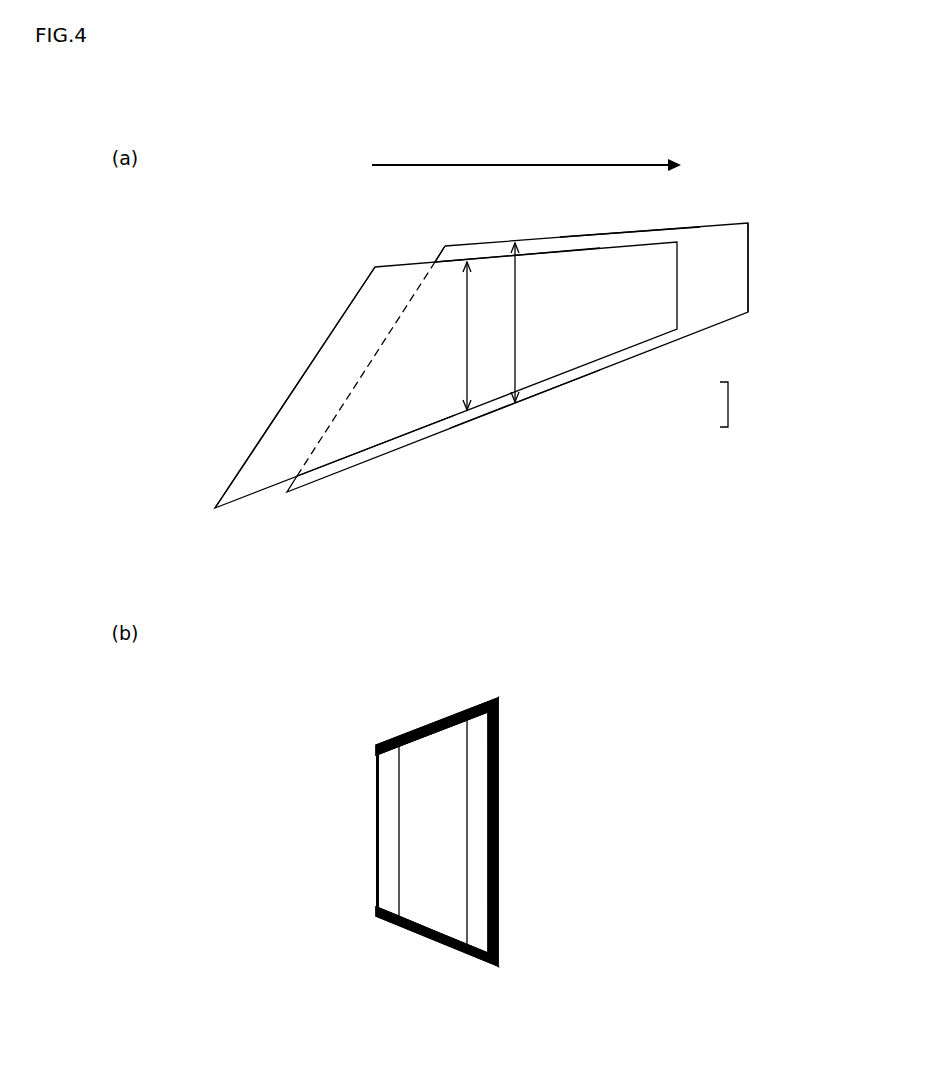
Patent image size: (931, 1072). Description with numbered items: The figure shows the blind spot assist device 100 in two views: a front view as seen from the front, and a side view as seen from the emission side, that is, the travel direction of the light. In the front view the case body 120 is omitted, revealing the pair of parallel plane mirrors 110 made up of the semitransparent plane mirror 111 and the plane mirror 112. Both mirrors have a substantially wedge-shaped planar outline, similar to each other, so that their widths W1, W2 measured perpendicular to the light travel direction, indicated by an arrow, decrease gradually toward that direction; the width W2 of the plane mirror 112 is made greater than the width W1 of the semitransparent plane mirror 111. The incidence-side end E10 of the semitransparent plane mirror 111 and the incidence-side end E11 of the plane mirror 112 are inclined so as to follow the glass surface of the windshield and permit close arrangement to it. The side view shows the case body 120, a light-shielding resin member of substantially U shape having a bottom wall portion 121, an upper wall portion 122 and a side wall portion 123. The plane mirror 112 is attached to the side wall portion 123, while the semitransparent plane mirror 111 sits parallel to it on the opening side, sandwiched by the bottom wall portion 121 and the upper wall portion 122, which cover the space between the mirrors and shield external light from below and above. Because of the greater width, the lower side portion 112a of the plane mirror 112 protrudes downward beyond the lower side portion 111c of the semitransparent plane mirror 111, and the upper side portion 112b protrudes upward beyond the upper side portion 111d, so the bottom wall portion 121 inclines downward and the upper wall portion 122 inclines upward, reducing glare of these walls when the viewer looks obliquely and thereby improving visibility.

The blind spot assist device 100 is at (762, 206).
The pair of parallel plane mirrors 110 is at (728, 404).
The semitransparent plane mirror 111 is at (542, 370).
The lower side portion of the semitransparent plane mirror 111c is at (456, 426).
The upper side portion of the semitransparent plane mirror 111d is at (553, 250).
The plane mirror 112 is at (688, 332).
The lower side portion of the plane mirror 112a is at (540, 393).
The upper side portion of the plane mirror 112b is at (612, 235).
The case body 120 is at (505, 777).
The bottom wall portion 121 is at (443, 943).
The upper wall portion 122 is at (436, 723).
The side wall portion 123 is at (501, 827).
The incidence-side end of the semitransparent plane mirror E10 is at (358, 290).
The incidence-side end of the plane mirror E11 is at (430, 273).
The width of the semitransparent plane mirror W1 is at (451, 336).
The width of the plane mirror W2 is at (501, 322).